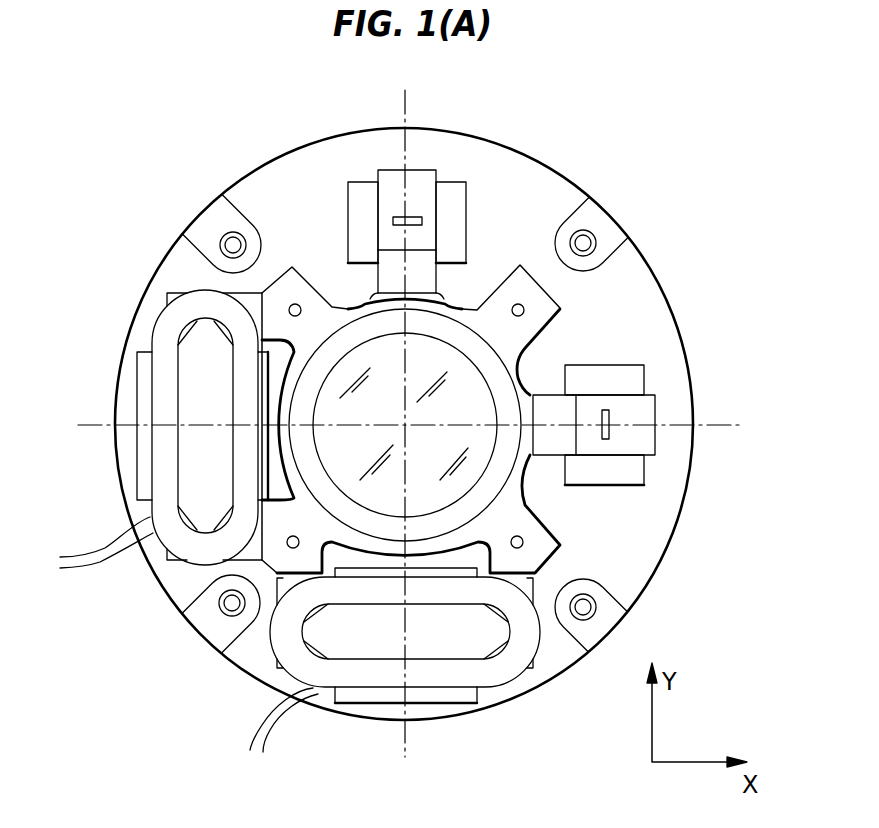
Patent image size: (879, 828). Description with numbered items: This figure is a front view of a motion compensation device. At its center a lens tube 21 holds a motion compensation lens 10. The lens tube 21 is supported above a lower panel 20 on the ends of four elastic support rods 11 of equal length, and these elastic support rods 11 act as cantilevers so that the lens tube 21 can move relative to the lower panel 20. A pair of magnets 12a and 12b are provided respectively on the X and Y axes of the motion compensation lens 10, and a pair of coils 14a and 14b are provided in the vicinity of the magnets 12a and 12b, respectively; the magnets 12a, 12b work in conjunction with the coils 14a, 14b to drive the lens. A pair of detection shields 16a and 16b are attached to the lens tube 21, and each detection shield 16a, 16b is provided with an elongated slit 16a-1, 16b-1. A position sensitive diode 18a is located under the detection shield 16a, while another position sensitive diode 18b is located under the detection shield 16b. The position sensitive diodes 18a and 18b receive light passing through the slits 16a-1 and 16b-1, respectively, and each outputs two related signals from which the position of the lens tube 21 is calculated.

The motion compensation lens 10 is at (471, 413).
The elastic support rods 11 is at (296, 304).
The magnet 12a is at (140, 470).
The magnet 12b is at (453, 697).
The coil 14a is at (183, 547).
The coil 14b is at (347, 673).
The detection shield 16a is at (638, 408).
The elongated slit 16a-1 is at (610, 438).
The detection shield 16b is at (423, 187).
The elongated slit 16b-1 is at (422, 224).
The position sensitive diode 18a is at (628, 473).
The position sensitive diode 18b is at (360, 198).
The lower panel 20 is at (617, 582).
The lens tube 21 is at (543, 318).